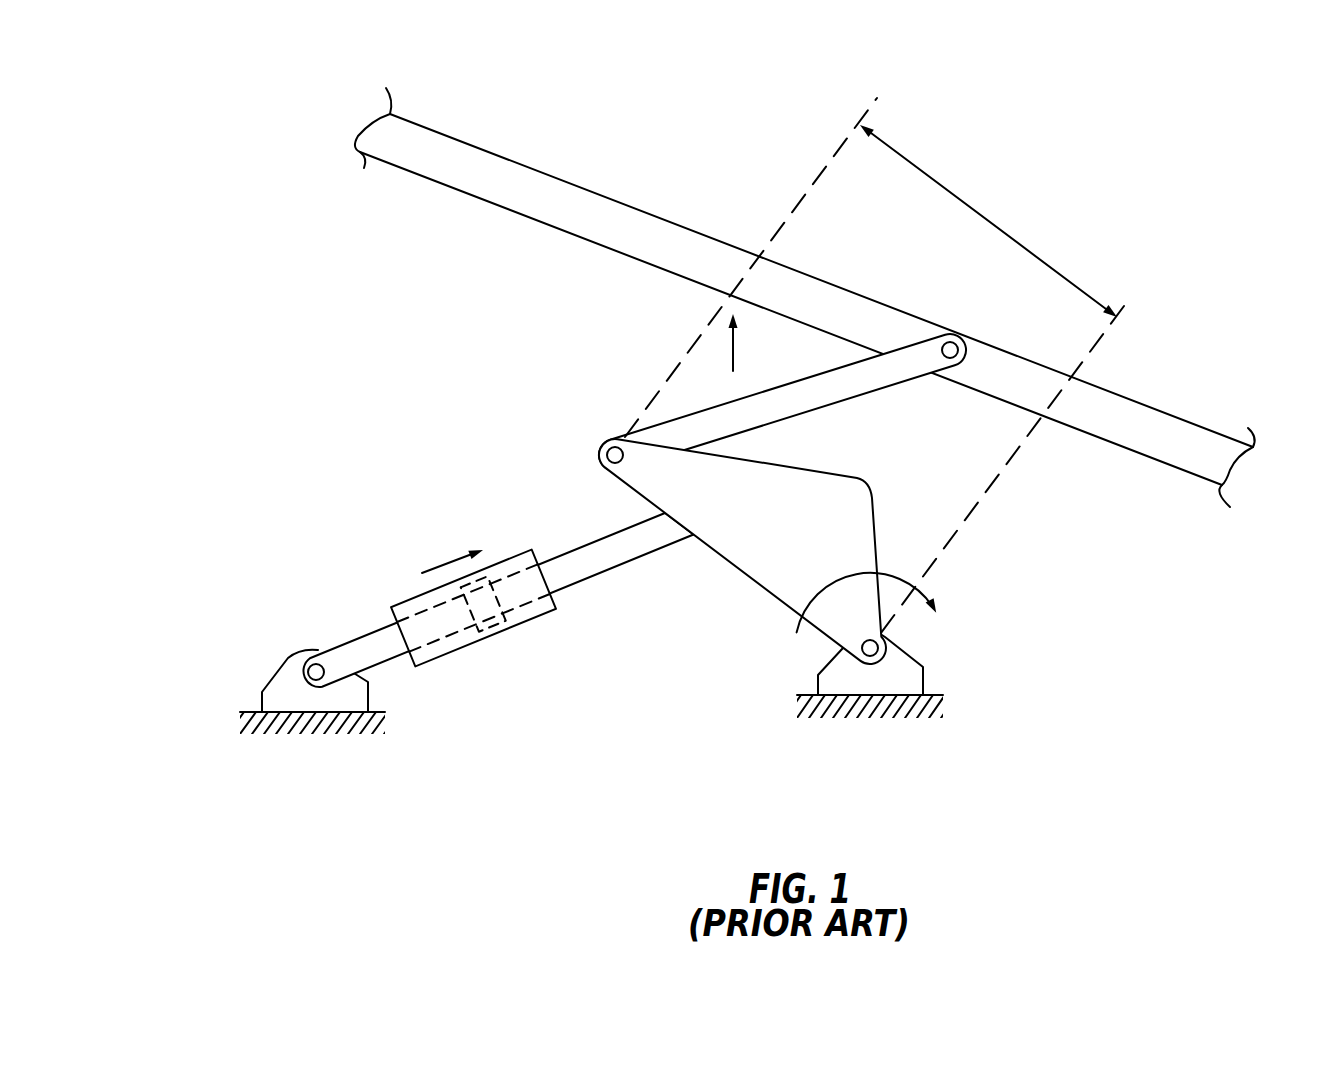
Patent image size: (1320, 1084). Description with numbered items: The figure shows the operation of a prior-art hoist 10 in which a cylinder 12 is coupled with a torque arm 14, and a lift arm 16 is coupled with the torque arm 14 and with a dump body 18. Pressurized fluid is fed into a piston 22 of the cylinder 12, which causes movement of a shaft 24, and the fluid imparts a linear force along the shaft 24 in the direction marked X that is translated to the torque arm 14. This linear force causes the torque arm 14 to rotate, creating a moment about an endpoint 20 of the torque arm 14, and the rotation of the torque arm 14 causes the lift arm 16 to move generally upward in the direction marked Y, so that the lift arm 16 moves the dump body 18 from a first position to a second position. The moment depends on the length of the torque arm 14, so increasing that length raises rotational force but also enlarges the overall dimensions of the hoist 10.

The hoist 10 is at (270, 323).
The cylinder 12 is at (474, 638).
The torque arm 14 is at (777, 575).
The lift arm 16 is at (808, 402).
The dump body 18 is at (1123, 413).
The endpoint 20 is at (801, 706).
The piston 22 is at (490, 632).
The shaft 24 is at (590, 553).